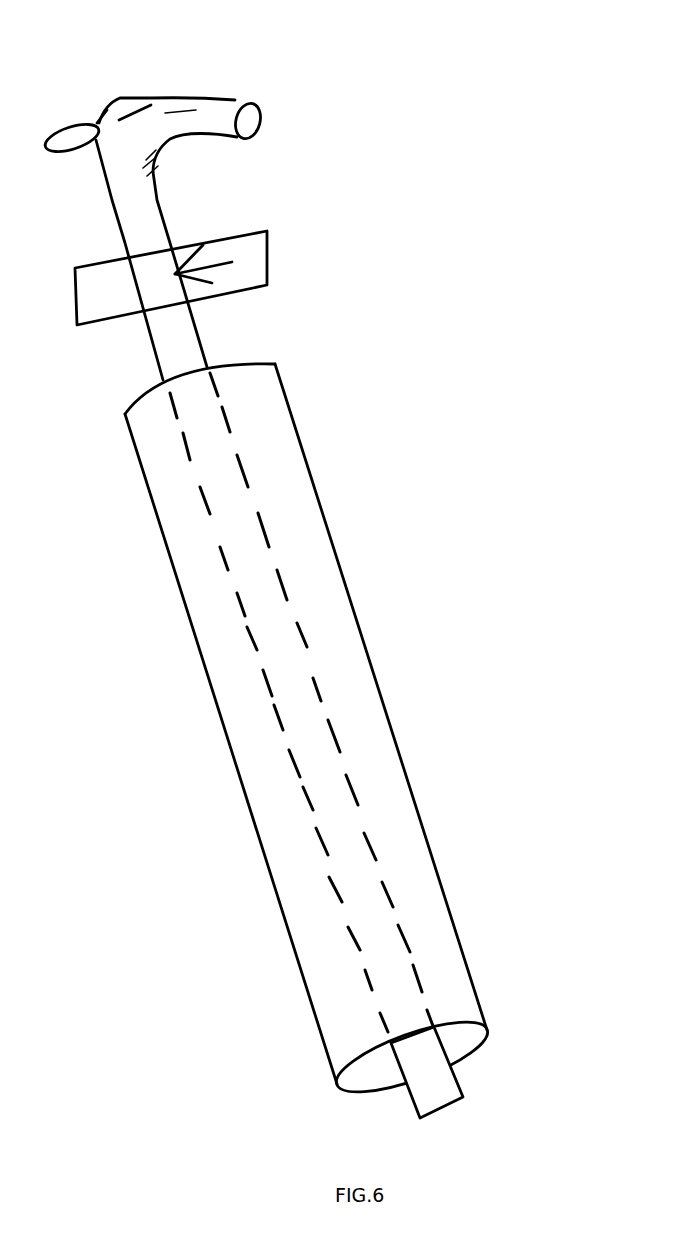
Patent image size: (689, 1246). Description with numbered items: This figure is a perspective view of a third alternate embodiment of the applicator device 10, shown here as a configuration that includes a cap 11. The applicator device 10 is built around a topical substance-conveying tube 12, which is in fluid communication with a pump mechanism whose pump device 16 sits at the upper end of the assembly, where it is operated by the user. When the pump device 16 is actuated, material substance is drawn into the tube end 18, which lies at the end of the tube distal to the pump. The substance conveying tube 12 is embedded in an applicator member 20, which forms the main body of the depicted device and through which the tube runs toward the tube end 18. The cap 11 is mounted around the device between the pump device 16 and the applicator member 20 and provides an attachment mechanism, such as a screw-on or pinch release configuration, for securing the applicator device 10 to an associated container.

The applicator device 10 is at (140, 78).
The pump device 16 is at (227, 100).
The cap 11 is at (272, 254).
The topical substance-conveying tube 12 is at (252, 637).
The applicator member 20 is at (382, 762).
The tube end 18 is at (467, 1107).